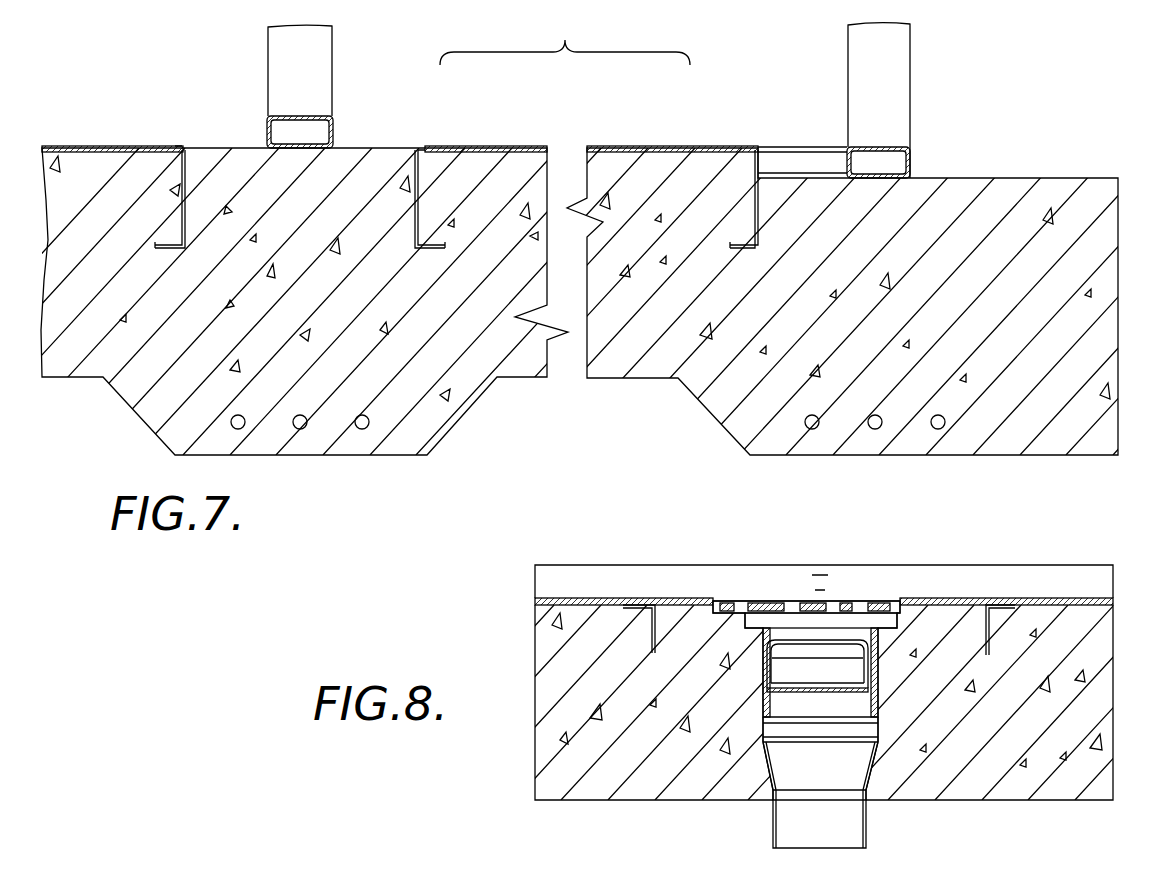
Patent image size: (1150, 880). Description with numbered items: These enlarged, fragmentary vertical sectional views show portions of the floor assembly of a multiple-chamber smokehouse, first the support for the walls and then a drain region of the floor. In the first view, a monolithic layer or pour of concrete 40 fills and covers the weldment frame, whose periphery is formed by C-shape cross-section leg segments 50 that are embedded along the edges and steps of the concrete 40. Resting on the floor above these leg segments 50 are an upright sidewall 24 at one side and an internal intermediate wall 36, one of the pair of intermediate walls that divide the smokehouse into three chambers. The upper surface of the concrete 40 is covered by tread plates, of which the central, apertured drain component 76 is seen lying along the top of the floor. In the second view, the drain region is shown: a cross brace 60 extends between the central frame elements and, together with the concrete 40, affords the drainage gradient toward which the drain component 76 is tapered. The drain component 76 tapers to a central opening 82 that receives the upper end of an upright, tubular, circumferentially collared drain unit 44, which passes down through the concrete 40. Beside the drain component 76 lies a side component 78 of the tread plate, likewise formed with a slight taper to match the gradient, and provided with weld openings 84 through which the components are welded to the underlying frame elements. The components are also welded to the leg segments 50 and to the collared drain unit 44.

In FIG. 7, the upright sidewall 24 is at (900, 80).
In FIG. 7, the intermediate wall 36 is at (285, 57).
In FIG. 7, the concrete 40 is at (103, 405).
In FIG. 8, the concrete 40 is at (530, 638).
In FIG. 8, the drain unit 44 is at (855, 822).
In FIG. 7, the longer leg segment 50 is at (185, 182).
In FIG. 8, the cross brace 60 is at (652, 628).
In FIG. 7, the central drain component 76 is at (80, 146).
In FIG. 8, the central drain component 76 is at (577, 598).
In FIG. 8, the side component 78 is at (994, 580).
In FIG. 8, the central opening 82 is at (772, 615).
In FIG. 8, the weld opening 84 is at (821, 575).